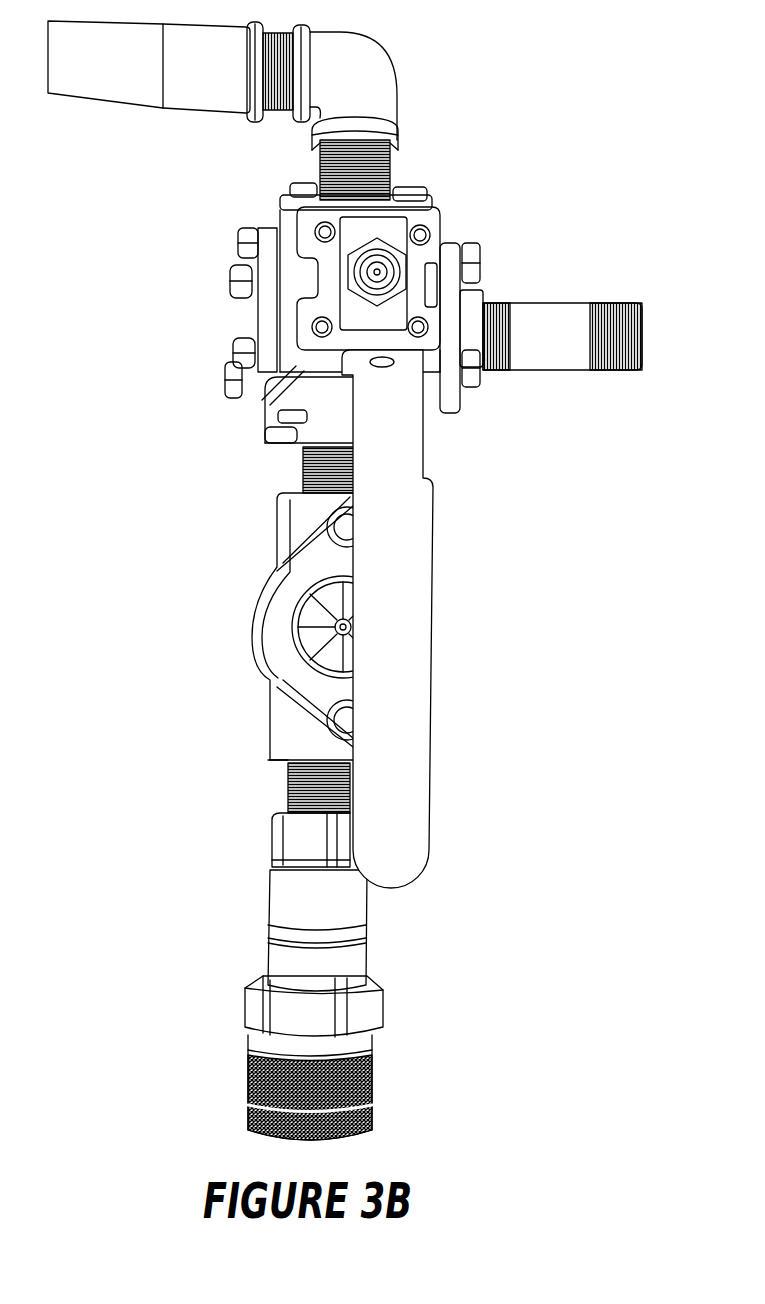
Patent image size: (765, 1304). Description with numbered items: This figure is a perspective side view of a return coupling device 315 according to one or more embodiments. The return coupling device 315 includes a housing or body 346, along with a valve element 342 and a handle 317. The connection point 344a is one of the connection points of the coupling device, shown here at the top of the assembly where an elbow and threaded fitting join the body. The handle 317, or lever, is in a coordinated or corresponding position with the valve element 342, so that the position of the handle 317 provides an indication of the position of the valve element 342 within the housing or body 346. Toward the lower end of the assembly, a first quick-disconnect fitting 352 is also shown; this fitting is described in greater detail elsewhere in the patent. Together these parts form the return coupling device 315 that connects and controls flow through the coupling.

The connection point 344a is at (320, 157).
The valve element 342 is at (413, 262).
The housing or body 346 is at (287, 313).
The return coupling device 315 is at (290, 407).
The handle 317 is at (413, 648).
The first quick-disconnect fitting 352 is at (370, 1017).